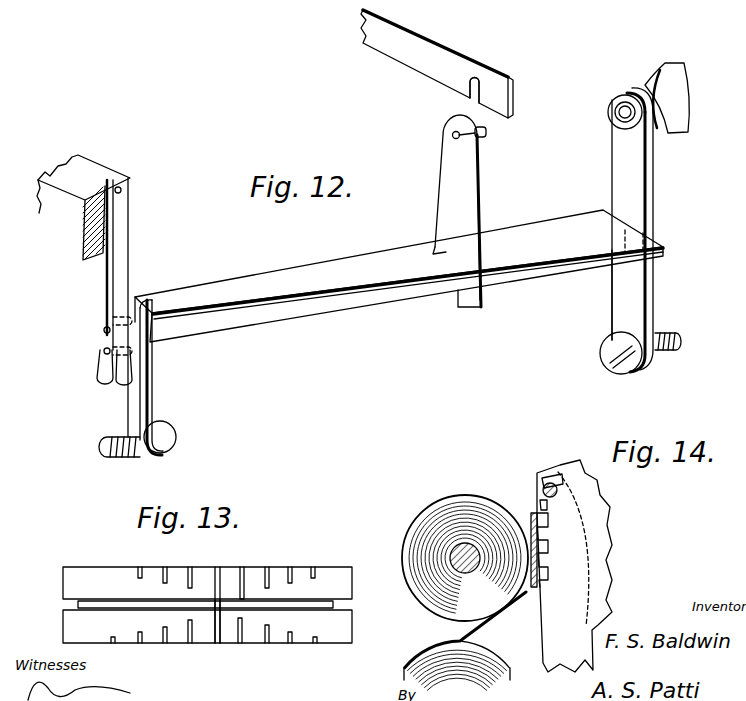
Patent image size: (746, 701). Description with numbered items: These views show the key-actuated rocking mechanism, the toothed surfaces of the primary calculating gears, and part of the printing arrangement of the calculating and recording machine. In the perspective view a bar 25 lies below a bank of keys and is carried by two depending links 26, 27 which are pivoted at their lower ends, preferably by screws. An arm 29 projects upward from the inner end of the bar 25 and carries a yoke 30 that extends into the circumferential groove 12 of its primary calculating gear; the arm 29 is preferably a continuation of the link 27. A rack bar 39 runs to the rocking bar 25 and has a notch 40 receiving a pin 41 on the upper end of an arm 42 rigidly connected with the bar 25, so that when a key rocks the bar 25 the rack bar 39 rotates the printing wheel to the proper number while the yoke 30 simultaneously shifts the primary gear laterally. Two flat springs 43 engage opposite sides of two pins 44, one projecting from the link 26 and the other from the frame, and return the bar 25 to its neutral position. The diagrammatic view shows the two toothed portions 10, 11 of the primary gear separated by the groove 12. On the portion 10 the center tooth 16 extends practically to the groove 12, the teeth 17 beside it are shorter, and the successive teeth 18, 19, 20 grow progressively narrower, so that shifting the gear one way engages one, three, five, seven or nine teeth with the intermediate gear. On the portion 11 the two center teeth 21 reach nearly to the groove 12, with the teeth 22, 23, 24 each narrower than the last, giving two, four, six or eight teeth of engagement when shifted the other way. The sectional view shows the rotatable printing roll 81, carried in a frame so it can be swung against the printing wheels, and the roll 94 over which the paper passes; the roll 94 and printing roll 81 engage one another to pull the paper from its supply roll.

In FIG. 12, the bar 25 is at (540, 231).
In FIG. 12, the depending link 26 is at (152, 393).
In FIG. 12, the depending link 27 is at (618, 313).
In FIG. 12, the arm 29 is at (614, 165).
In FIG. 12, the yoke 30 is at (672, 69).
In FIG. 12, the rack bar 39 is at (447, 47).
In FIG. 12, the notch 40 is at (468, 98).
In FIG. 12, the pin 41 is at (487, 133).
In FIG. 12, the arm 42 is at (472, 202).
In FIG. 12, the flat spring 43 is at (118, 279).
In FIG. 12, the pin 44 is at (112, 348).
In FIG. 13, the toothed portion 10 is at (63, 627).
In FIG. 13, the toothed portion 11 is at (63, 581).
In FIG. 13, the circumferential groove 12 is at (78, 604).
In FIG. 13, the center tooth 16 is at (217, 643).
In FIG. 13, the teeth 17 is at (191, 643).
In FIG. 13, the teeth 18 is at (166, 643).
In FIG. 13, the teeth 19 is at (140, 643).
In FIG. 13, the teeth 20 is at (314, 568).
In FIG. 13, the center teeth 21 is at (217, 567).
In FIG. 13, the teeth 22 is at (224, 573).
In FIG. 13, the teeth 23 is at (180, 563).
In FIG. 13, the teeth 24 is at (146, 563).
In FIG. 14, the printing roll 81 is at (462, 507).
In FIG. 14, the roll 94 is at (498, 662).